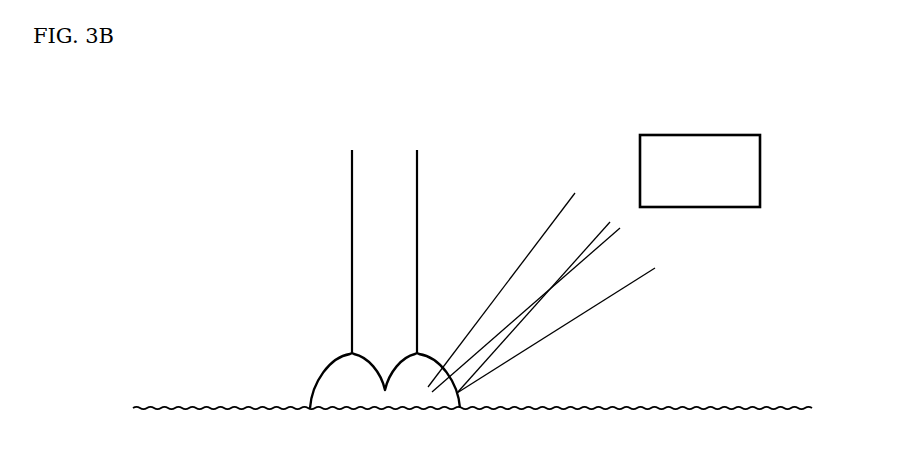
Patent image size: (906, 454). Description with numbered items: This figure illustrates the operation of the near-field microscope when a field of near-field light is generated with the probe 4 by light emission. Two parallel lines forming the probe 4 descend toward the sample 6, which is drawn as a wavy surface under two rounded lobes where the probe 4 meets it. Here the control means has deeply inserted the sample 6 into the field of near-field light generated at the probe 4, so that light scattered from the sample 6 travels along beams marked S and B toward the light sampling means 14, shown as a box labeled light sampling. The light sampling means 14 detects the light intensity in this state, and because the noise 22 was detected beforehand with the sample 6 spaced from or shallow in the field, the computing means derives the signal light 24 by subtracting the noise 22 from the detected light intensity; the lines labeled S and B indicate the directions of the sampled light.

The probe 4 is at (417, 170).
The sample 6 is at (400, 452).
The light sampling means 14 is at (733, 112).
The noise 22 is at (562, 314).
The signal light 24 is at (530, 267).
The beam S is at (526, 310).
The beam B is at (533, 307).